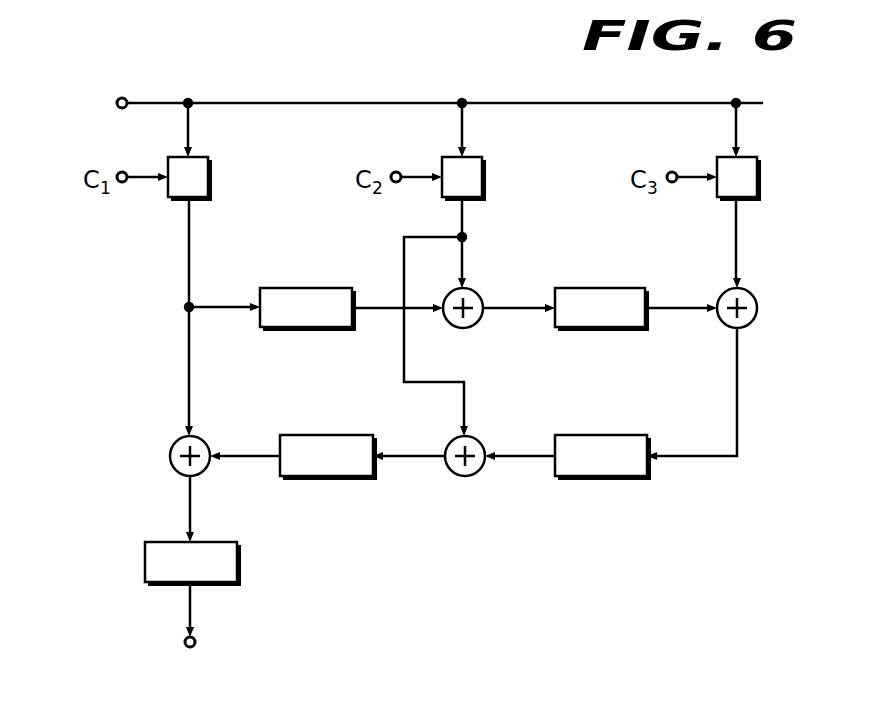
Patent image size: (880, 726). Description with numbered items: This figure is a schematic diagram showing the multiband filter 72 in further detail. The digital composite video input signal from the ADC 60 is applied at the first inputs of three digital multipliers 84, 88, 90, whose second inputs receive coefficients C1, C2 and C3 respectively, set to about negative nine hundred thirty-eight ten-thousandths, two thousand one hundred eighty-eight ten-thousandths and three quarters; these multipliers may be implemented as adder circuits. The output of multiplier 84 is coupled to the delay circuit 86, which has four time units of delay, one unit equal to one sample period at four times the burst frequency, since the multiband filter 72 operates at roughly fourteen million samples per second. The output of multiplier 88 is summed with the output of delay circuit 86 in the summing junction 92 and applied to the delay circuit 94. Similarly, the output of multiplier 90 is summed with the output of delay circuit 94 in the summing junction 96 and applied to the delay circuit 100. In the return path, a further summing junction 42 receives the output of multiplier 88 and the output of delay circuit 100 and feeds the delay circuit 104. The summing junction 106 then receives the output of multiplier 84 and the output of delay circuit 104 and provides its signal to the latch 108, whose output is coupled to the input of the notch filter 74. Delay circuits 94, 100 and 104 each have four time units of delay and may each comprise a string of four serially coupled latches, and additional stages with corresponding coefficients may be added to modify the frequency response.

The ADC 60 is at (86, 103).
The digital multiplier 84 is at (211, 186).
The digital multiplier 88 is at (485, 186).
The digital multiplier 90 is at (759, 186).
The delay circuit 86 is at (321, 288).
The delay circuit 94 is at (612, 288).
The delay circuit 100 is at (613, 435).
The delay circuit 104 is at (314, 434).
The summing junction 92 is at (477, 324).
The summing junction 96 is at (752, 320).
The summer 42 is at (470, 476).
The summing junction 106 is at (175, 448).
The latch 108 is at (240, 565).
The multiband filter 72 is at (679, 618).
The notch filter 74 is at (190, 673).